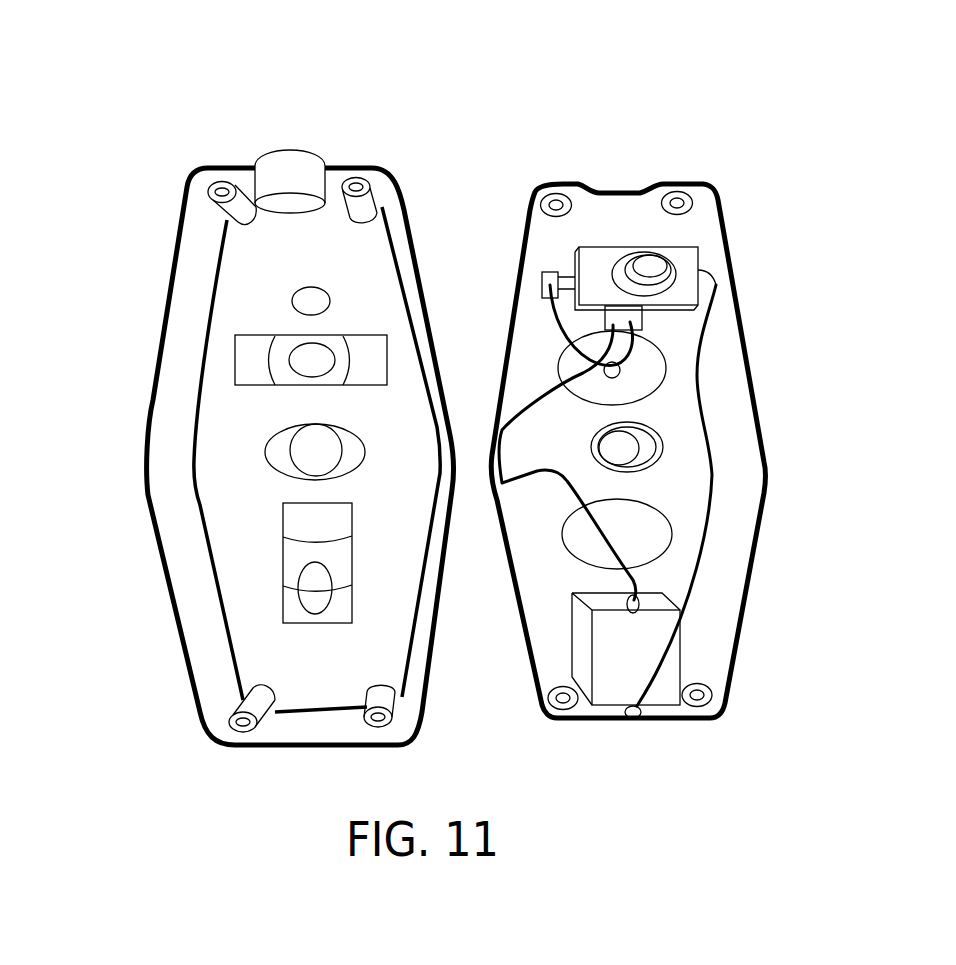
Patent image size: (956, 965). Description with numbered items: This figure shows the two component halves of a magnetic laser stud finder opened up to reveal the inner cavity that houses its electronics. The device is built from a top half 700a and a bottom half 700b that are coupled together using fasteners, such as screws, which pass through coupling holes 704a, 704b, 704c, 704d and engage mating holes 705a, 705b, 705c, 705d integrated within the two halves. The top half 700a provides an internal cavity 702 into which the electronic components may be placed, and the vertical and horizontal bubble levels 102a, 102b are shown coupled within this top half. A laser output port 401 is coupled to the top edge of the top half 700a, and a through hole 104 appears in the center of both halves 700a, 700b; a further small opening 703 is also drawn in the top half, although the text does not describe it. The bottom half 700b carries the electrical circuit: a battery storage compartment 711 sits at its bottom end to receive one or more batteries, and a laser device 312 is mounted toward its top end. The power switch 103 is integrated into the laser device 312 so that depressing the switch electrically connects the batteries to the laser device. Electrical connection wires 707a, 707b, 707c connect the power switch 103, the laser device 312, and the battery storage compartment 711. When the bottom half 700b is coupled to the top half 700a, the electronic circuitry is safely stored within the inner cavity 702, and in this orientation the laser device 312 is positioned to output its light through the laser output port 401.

The top half 700a is at (240, 62).
The bottom half 700b is at (681, 89).
The internal cavity 702 is at (250, 272).
The laser output port 401 is at (293, 150).
The coupling hole 704a is at (223, 190).
The coupling hole 704b is at (357, 186).
The coupling hole 704c is at (380, 721).
The coupling hole 704d is at (247, 722).
The opening 703 is at (311, 296).
The vertical bubble level 102a is at (253, 360).
The horizontal bubble level 102b is at (293, 557).
The through hole 104 is at (313, 447).
The mating hole 705a is at (557, 203).
The mating hole 705b is at (684, 204).
The mating hole 705c is at (698, 697).
The mating hole 705d is at (565, 699).
The laser device 312 is at (627, 240).
The power switch 103 is at (673, 274).
The electrical connection wire 707a is at (557, 307).
The electrical connection wire 707b is at (508, 470).
The electrical connection wire 707c is at (713, 480).
The battery storage compartment 711 is at (683, 657).